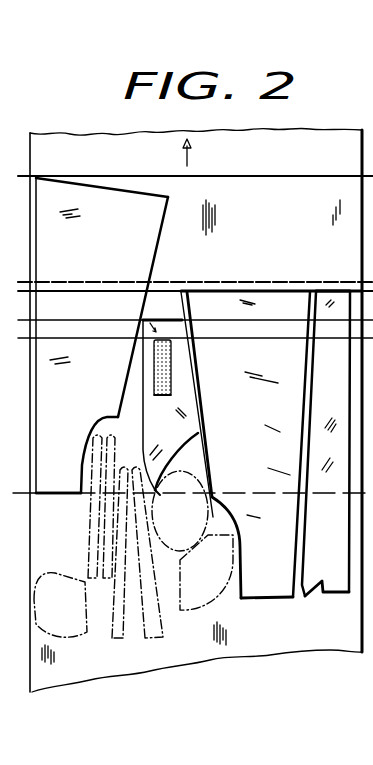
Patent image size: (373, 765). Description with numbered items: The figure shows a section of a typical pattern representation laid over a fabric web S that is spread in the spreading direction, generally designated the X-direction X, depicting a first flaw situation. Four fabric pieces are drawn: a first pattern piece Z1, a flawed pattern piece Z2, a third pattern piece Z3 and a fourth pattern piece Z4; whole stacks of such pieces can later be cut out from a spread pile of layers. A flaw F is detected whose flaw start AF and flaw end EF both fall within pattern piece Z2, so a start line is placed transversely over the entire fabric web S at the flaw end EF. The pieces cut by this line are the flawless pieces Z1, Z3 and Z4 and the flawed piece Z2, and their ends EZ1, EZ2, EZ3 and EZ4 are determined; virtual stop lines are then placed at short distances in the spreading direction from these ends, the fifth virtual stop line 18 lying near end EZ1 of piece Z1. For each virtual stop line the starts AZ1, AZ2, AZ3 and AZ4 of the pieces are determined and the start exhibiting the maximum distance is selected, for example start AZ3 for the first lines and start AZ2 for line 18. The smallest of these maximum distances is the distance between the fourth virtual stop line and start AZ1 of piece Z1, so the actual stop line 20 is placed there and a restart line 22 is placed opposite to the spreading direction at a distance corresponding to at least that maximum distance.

The fabric web S is at (105, 147).
The fifth virtual stop line 18 is at (245, 176).
The actual stop line 20 is at (225, 282).
The restart line 22 is at (255, 493).
The spreading direction X is at (192, 154).
The first pattern piece Z1 is at (188, 349).
The flawed pattern piece Z2 is at (163, 411).
The third pattern piece Z3 is at (271, 448).
The fourth pattern piece Z4 is at (329, 447).
The end of pattern piece Z 1 EZ1 is at (37, 177).
The end of flawed pattern piece Z 2 EZ2 is at (155, 320).
The end of pattern piece Z 3 EZ3 is at (310, 290).
The end of pattern piece Z 4 EZ4 is at (320, 292).
The start of pattern piece Z 1 AZ1 is at (57, 497).
The start of flawed pattern piece Z 2 AZ2 is at (160, 496).
The start of pattern piece Z 3 AZ3 is at (265, 600).
The start of pattern piece Z 4 AZ4 is at (306, 597).
The flaw F is at (154, 365).
The flaw end EF is at (187, 340).
The flaw start AF is at (165, 400).